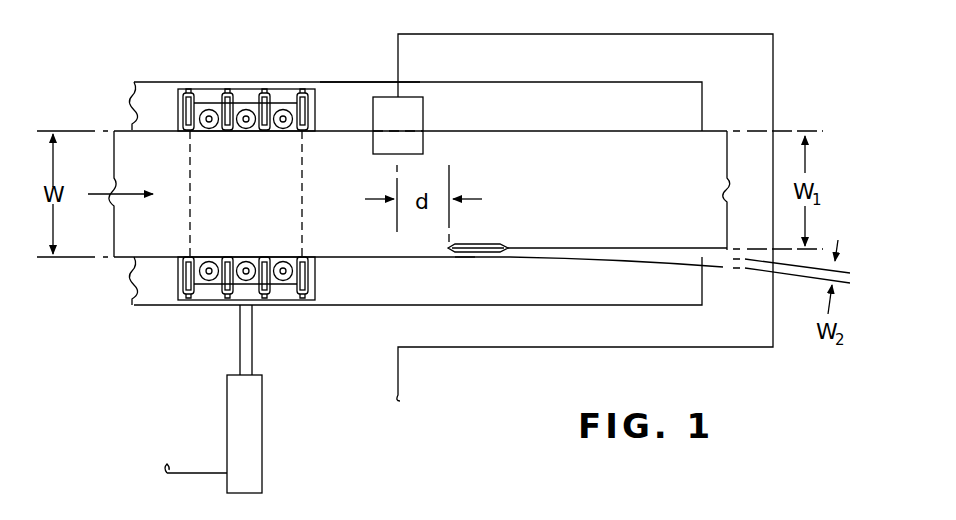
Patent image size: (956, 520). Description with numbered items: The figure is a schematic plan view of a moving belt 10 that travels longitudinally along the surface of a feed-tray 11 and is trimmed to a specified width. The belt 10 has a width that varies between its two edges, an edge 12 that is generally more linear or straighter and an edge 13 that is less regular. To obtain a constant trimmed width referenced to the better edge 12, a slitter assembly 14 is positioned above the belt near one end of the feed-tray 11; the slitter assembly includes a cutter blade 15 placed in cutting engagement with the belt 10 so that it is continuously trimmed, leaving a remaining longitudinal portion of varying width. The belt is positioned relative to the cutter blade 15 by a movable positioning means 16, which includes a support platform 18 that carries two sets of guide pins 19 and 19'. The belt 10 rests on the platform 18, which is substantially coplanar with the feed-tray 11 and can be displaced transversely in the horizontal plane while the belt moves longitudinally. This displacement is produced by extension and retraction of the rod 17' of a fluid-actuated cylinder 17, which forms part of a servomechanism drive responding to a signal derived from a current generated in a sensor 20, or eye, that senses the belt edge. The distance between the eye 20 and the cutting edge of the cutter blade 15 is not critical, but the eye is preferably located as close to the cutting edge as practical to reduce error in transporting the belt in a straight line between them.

The moving belt 10 is at (122, 264).
The feed-tray 11 is at (146, 97).
The edge 12 is at (340, 128).
The edge 13 is at (357, 257).
The slitter assembly 14 is at (463, 262).
The cutter blade 15 is at (487, 252).
The positioning means 16 is at (209, 94).
The fluid-actuated cylinder 17 is at (213, 434).
The rod 17' is at (210, 341).
The support platform 18 is at (190, 178).
The guide pins 19 is at (243, 304).
The guide pins 19' is at (246, 82).
The sensor 20 is at (383, 95).